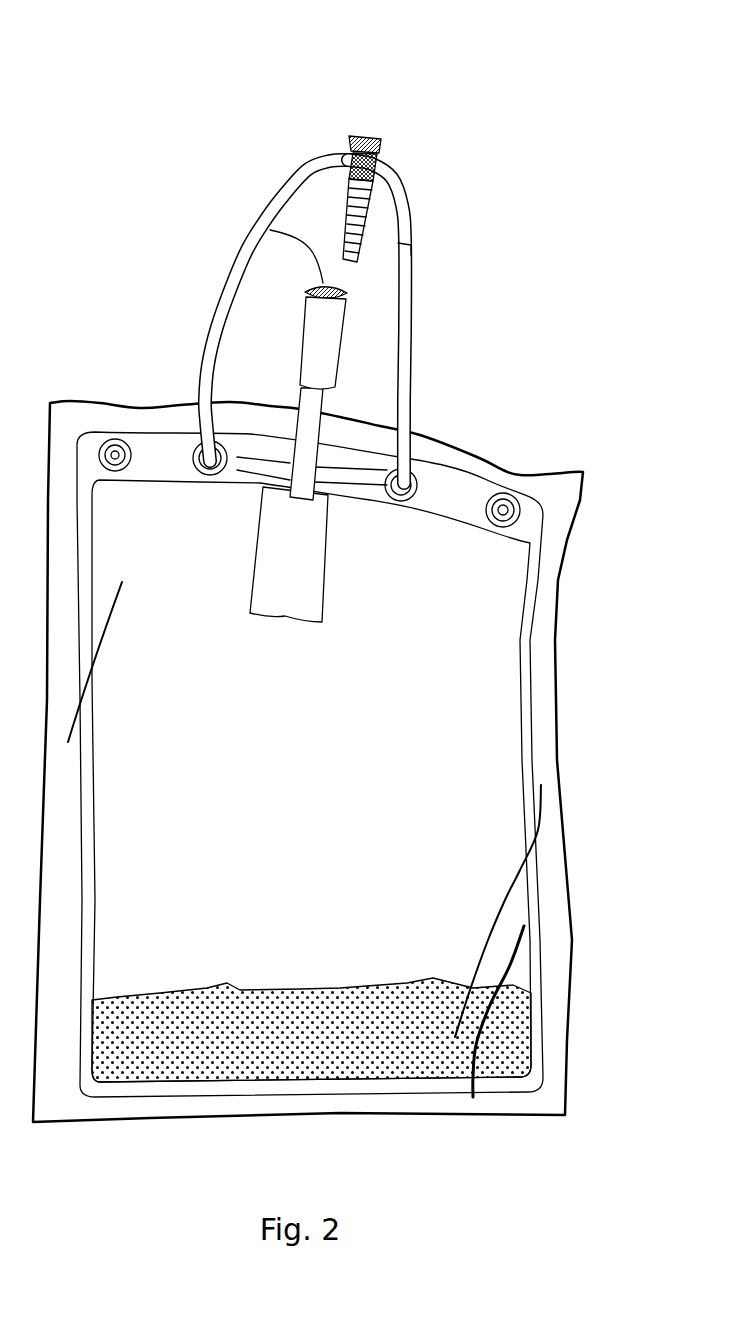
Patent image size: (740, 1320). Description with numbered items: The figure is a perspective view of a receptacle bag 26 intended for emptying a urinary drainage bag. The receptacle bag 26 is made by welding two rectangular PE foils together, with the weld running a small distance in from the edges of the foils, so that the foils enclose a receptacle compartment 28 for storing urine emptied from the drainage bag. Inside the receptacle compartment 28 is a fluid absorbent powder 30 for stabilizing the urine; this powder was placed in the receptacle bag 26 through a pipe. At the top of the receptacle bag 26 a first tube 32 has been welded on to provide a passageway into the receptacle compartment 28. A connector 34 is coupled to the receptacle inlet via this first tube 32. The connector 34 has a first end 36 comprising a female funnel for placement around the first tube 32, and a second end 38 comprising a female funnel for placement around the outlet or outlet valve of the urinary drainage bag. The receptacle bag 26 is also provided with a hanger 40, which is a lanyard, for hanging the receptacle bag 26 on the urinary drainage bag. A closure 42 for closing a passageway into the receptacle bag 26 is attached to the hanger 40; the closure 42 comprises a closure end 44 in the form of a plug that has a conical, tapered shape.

The receptacle bag 26 is at (458, 97).
The receptacle compartment 28 is at (480, 630).
The fluid absorbent powder 30 is at (503, 1033).
The first tube 32 is at (302, 445).
The connector 34 is at (328, 353).
The first end 36 is at (300, 380).
The second end 38 is at (270, 230).
The hanger 40 is at (412, 303).
The closure 42 is at (373, 189).
The closure end 44 is at (412, 250).